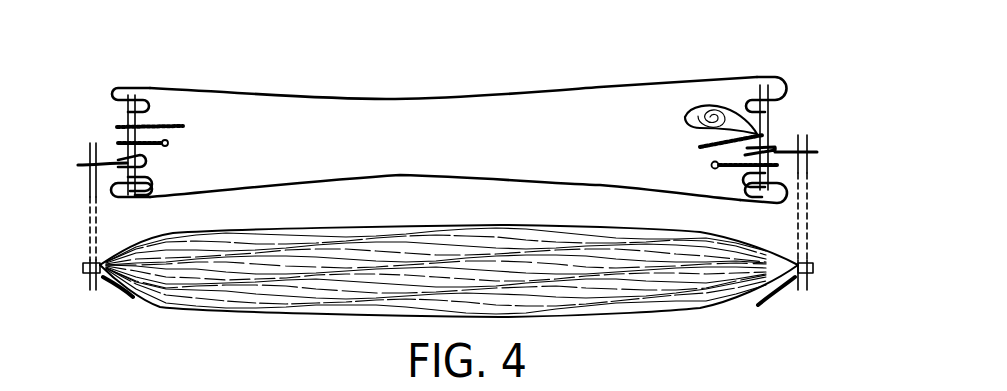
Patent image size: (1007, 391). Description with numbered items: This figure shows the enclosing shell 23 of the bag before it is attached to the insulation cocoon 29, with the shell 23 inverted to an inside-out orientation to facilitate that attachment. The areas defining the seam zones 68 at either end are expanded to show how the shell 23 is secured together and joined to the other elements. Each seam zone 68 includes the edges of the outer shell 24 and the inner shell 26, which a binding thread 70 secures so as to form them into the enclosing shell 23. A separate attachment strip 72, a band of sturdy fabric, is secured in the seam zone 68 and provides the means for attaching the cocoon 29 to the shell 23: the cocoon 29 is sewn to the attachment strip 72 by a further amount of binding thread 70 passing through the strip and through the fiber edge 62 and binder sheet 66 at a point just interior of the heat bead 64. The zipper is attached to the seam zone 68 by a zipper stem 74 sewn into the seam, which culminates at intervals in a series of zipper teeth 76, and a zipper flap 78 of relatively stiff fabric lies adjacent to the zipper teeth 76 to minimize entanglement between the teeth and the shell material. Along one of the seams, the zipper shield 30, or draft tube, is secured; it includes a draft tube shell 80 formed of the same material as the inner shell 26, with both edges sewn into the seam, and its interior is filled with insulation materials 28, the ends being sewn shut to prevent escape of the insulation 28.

The enclosing shell 23 is at (510, 82).
The outer shell 24 is at (110, 185).
The inner shell 26 is at (145, 100).
The insulation materials 28 is at (352, 273).
The cocoon 29 is at (542, 325).
The zipper shield 30 is at (710, 100).
The fiber edge 62 is at (80, 290).
The heat bead 64 is at (87, 267).
The binder sheet 66 is at (132, 298).
The seam zone 68 is at (95, 88).
The binding thread 70 is at (147, 192).
The attachment strip 72 is at (78, 165).
The zipper stem 74 is at (118, 145).
The zipper teeth 76 is at (168, 143).
The zipper flap 78 is at (163, 128).
The draft tube shell 80 is at (690, 115).